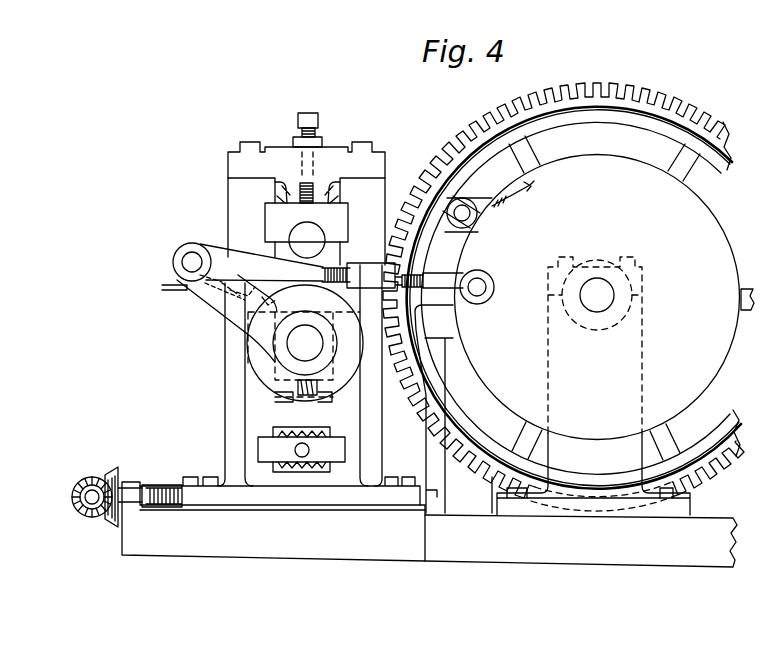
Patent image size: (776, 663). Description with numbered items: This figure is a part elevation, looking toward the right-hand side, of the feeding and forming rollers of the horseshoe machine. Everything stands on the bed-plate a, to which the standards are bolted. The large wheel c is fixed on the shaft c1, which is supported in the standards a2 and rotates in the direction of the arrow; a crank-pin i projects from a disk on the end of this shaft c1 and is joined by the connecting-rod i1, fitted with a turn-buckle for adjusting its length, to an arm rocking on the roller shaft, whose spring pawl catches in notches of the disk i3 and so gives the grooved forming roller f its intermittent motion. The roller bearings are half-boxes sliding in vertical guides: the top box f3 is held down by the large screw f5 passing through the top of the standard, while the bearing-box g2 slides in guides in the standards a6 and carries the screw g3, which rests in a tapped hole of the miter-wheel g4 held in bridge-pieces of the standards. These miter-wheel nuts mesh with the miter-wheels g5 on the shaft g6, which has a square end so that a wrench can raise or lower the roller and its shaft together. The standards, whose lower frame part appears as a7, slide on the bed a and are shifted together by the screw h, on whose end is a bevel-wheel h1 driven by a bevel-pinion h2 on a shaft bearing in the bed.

The bed-plate a is at (429, 524).
The standards a2 is at (552, 386).
The standards a6 is at (306, 203).
The frame posts a7 is at (280, 385).
The wheel c is at (568, 297).
The shaft c1 is at (597, 295).
The forming and feeding roller f is at (296, 199).
The top half-box f3 is at (320, 233).
The screw f5 is at (316, 125).
The bearing-box g2 is at (333, 377).
The screw g3 is at (329, 397).
The miter-wheel g4 is at (300, 435).
The miter-wheel g5 is at (301, 469).
The shaft g6 is at (301, 449).
The screw h is at (162, 490).
The bevel-wheel h1 is at (123, 488).
The bevel-pinion h2 is at (80, 497).
The crank-pin i is at (328, 312).
The connecting-rod i1 is at (248, 262).
The disk i3 is at (305, 343).